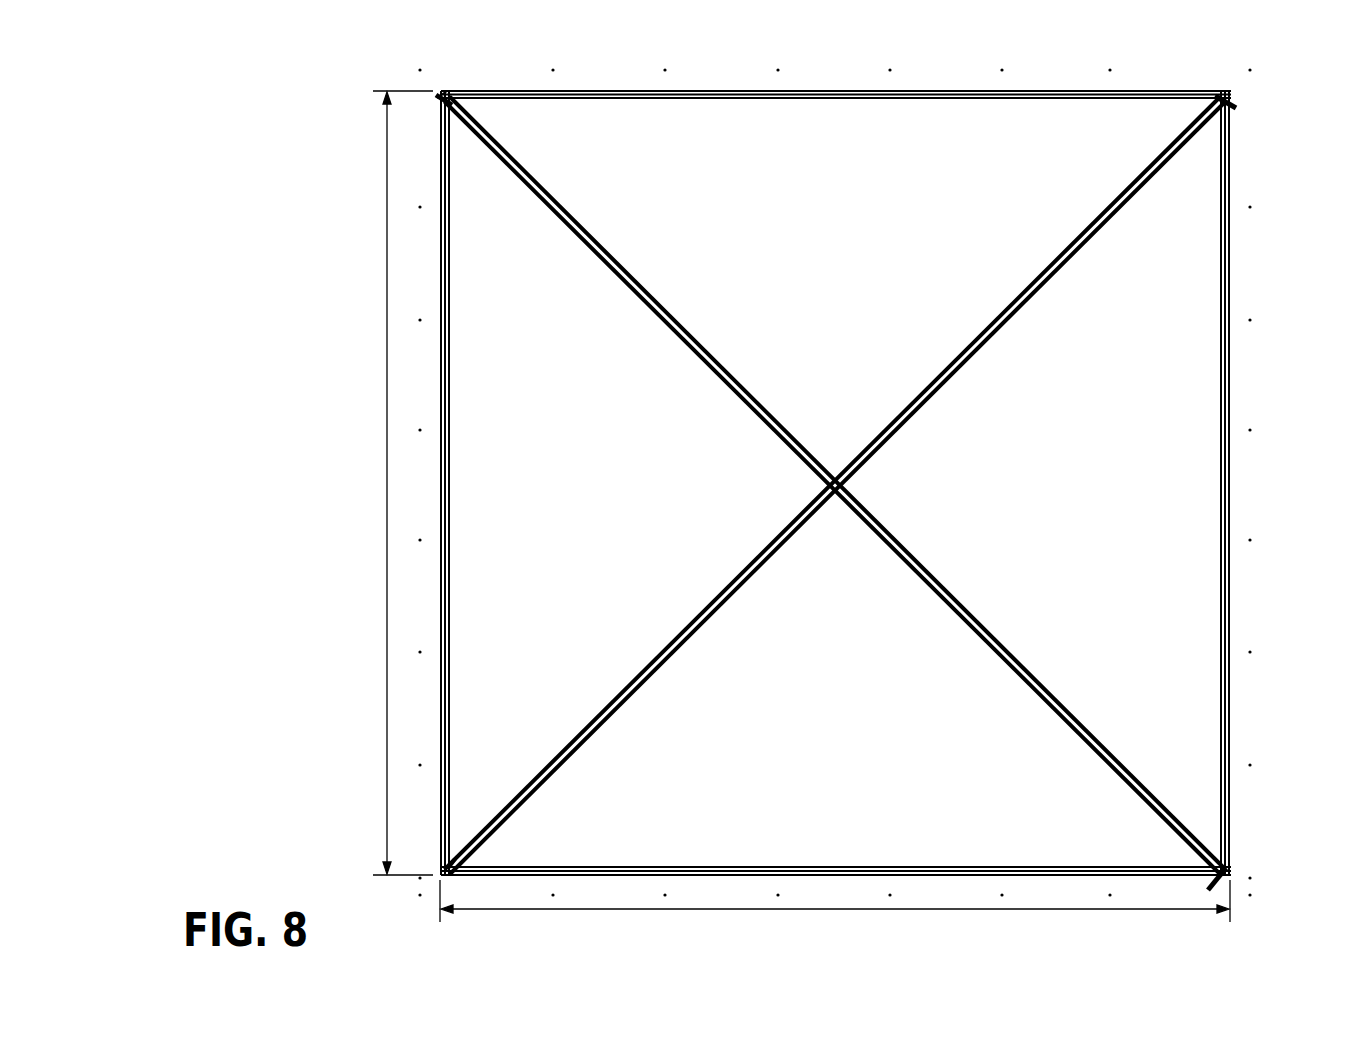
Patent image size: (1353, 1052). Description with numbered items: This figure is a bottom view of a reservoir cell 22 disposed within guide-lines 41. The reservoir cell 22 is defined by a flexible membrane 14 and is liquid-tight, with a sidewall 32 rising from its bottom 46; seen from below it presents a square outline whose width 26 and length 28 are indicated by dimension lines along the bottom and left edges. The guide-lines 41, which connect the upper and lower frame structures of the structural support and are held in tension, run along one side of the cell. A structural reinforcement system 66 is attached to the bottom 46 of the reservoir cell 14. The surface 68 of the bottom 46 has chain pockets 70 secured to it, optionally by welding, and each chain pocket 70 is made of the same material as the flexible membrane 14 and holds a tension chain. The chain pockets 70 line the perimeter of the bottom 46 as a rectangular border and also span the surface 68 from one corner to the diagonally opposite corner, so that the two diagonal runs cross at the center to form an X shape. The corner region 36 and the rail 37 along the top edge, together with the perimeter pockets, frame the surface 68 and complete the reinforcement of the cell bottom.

The flexible membrane 14 is at (1249, 483).
The reservoir cell 22 is at (1249, 483).
The width 26 is at (788, 910).
The length 28 is at (385, 373).
The sidewall 32 is at (836, 62).
The corner connector 36 is at (441, 92).
The top rail 37 is at (828, 90).
The guide-lines 41 is at (1259, 483).
The bottom 46 is at (1180, 182).
The structural reinforcement system 66 is at (1268, 592).
The surface 68 is at (850, 242).
The chain pockets 70 is at (643, 286).